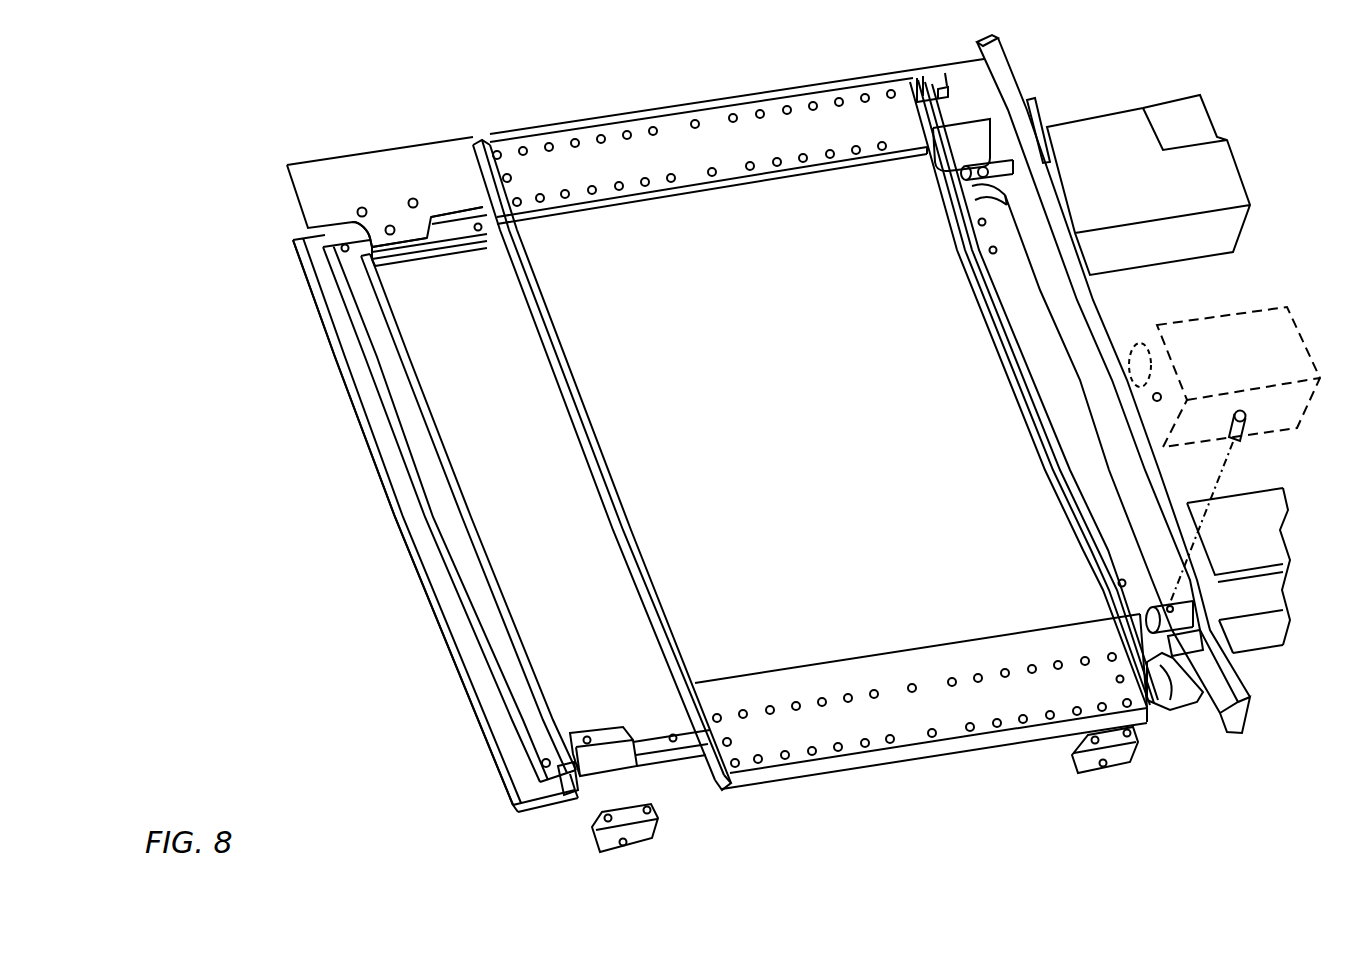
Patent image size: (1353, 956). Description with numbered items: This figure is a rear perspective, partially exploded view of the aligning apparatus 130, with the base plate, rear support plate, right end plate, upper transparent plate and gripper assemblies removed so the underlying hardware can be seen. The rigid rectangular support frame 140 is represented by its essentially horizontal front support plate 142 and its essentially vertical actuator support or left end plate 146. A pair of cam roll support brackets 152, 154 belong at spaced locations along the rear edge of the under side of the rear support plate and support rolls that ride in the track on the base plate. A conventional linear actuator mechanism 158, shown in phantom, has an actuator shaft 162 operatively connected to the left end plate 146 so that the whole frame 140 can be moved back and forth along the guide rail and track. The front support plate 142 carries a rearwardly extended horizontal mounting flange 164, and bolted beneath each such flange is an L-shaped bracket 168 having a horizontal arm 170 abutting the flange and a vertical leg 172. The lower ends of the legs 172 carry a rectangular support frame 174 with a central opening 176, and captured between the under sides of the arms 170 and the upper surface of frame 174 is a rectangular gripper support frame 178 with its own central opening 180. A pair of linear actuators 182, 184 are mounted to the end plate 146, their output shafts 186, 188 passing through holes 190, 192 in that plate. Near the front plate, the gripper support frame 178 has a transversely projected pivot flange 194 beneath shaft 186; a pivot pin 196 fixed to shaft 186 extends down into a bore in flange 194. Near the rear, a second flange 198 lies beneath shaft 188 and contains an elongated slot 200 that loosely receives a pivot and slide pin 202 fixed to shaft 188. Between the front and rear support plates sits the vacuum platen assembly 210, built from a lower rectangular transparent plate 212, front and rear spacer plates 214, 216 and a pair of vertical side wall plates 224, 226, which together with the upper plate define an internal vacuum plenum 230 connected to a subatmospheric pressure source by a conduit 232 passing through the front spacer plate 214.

The apparatus 130 is at (418, 620).
The rigid rectangular support frame 140 is at (306, 160).
The front support plate 142 is at (438, 160).
The actuator support or left end plate 146 is at (1005, 77).
The cam roll support bracket 152 is at (1130, 757).
The cam roll support bracket 154 is at (655, 825).
The linear actuator mechanism 158 is at (1298, 336).
The actuator shaft 162 is at (1155, 350).
The mounting flange 164 is at (401, 226).
The L-shaped bracket 168 is at (553, 792).
The horizontal arm 170 is at (418, 268).
The vertical leg 172 is at (590, 788).
The rectangular support frame 174 is at (423, 552).
The central opening 176 is at (393, 275).
The gripper support frame 178 is at (418, 455).
The central opening 180 is at (465, 252).
The linear actuator 182 is at (1222, 172).
The linear actuator 184 is at (1278, 532).
The output shaft 186 is at (943, 172).
The output shaft 188 is at (1205, 609).
The hole 190 is at (1030, 146).
The hole 192 is at (1215, 640).
The pivot flange 194 is at (963, 230).
The pivot pin 196 is at (958, 218).
The flange 198 is at (1165, 705).
The elongated slot 200 is at (1100, 620).
The pivot and slide pin 202 is at (1246, 435).
The vacuum platen assembly 210 is at (904, 771).
The lower rectangular transparent plate 212 is at (950, 623).
The front spacer plate 214 is at (663, 128).
The rear spacer plate 216 is at (817, 742).
The vertical side wall plate 224 is at (1055, 470).
The vertical side wall plate 226 is at (630, 528).
The internal vacuum plenum 230 is at (795, 499).
The conduit 232 is at (918, 95).